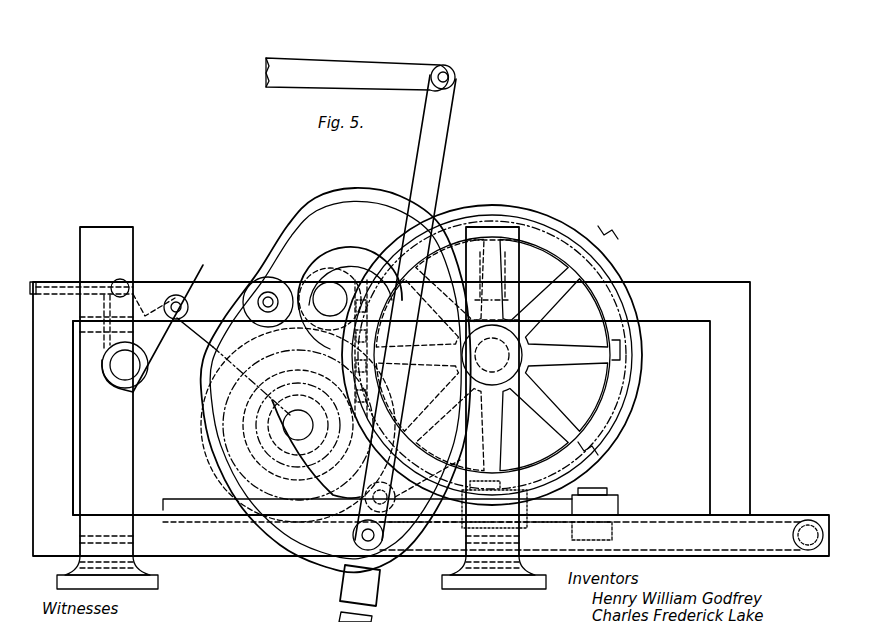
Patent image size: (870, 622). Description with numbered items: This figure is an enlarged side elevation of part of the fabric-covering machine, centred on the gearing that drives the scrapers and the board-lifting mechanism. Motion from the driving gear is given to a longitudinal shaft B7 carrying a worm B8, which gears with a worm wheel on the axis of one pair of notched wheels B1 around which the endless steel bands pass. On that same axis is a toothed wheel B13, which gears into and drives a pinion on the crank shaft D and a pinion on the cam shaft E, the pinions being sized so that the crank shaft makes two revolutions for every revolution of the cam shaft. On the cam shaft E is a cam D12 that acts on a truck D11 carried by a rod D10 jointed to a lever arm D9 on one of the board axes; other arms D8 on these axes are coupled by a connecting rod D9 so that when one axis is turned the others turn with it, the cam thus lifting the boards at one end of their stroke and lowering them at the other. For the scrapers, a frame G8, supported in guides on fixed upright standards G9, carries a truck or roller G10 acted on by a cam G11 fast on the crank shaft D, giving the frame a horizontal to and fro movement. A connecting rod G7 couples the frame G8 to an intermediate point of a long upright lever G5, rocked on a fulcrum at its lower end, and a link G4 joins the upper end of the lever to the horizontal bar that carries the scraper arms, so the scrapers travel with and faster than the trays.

The frame G8 is at (652, 570).
The connecting rod G7 is at (756, 548).
The fixed upright standards G9 is at (301, 408).
The notched wheels B1 is at (558, 252).
The toothed wheel B13 is at (612, 283).
The cam G11 is at (352, 192).
The links G4 is at (360, 74).
The long upright levers G5 is at (397, 348).
The cam shaft E is at (298, 425).
The truck or roller G10 is at (283, 281).
The crank shaft D is at (333, 344).
The cam D12 is at (268, 486).
The lever arm D9 is at (35, 282).
The arms D8 is at (134, 283).
The rod D10 is at (196, 340).
The truck D11 is at (394, 501).
The longitudinal shaft B7 is at (190, 503).
The worm B8 is at (528, 512).